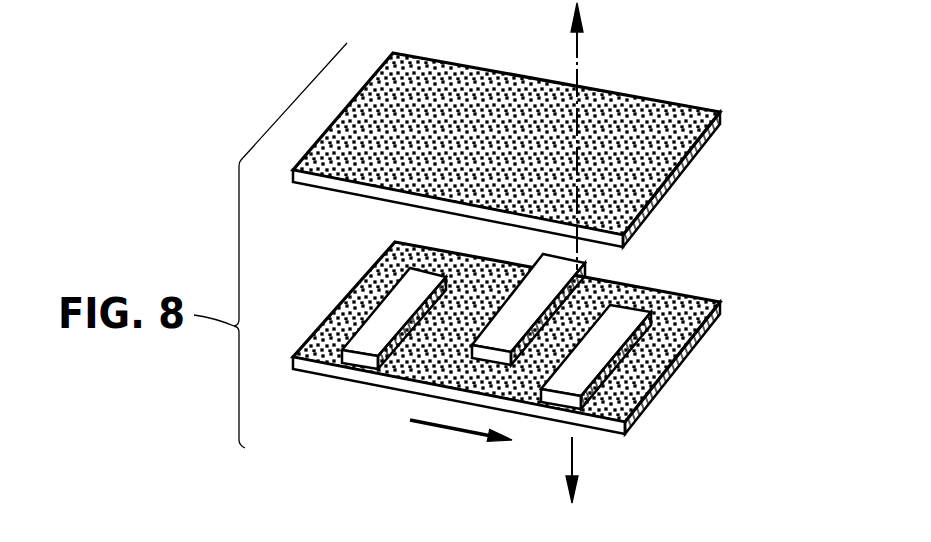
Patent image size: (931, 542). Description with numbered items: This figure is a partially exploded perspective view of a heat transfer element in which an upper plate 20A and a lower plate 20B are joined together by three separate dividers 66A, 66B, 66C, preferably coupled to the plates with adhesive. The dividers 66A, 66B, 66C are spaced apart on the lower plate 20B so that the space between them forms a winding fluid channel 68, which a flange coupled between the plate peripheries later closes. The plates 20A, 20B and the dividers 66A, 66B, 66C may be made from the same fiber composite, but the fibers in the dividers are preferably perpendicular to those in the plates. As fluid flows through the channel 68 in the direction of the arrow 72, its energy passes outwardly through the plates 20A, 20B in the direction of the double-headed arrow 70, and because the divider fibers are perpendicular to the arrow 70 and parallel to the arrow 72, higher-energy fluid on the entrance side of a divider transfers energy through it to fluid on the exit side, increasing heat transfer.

The upper plate 20A is at (723, 118).
The lower plate 20B is at (540, 330).
The divider 66A is at (385, 320).
The divider 66B is at (493, 326).
The divider 66C is at (595, 352).
The winding fluid channel 68 is at (427, 263).
The double-headed arrow 70 is at (575, 460).
The arrow 72 is at (453, 432).